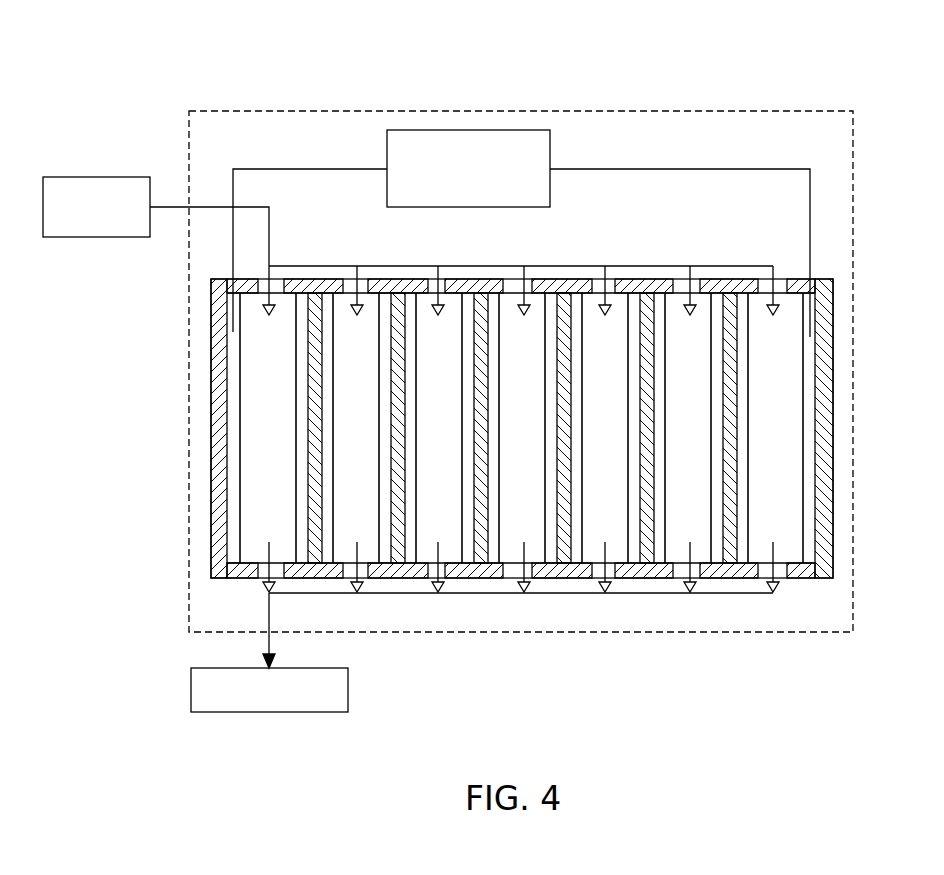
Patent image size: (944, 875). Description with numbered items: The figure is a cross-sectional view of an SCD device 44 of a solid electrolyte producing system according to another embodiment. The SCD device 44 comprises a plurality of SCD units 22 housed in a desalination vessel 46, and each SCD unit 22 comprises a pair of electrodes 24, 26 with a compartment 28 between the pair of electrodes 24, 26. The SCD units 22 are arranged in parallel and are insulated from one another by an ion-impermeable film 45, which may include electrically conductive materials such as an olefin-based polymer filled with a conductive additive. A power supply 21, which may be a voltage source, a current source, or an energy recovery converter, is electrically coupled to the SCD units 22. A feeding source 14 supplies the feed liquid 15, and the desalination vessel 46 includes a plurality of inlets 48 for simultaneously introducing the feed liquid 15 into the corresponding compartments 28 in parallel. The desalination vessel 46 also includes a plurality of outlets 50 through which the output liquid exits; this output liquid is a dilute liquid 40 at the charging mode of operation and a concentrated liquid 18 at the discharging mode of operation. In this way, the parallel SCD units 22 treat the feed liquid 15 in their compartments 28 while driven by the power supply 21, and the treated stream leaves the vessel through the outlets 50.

The feeding source 14 is at (95, 177).
The feed liquid 15 is at (268, 207).
The power supply 21 is at (466, 130).
The SCD unit 22 is at (258, 421).
The electrode 24 is at (232, 372).
The electrode 26 is at (300, 358).
The compartment 28 is at (255, 478).
The dilute liquid 40 is at (284, 672).
The concentrated liquid 18 is at (273, 713).
The SCD device 44 is at (810, 107).
The ion-impermeable film 45 is at (318, 498).
The desalination vessel 46 is at (217, 503).
The inlet 48 is at (262, 287).
The outlet 50 is at (262, 580).